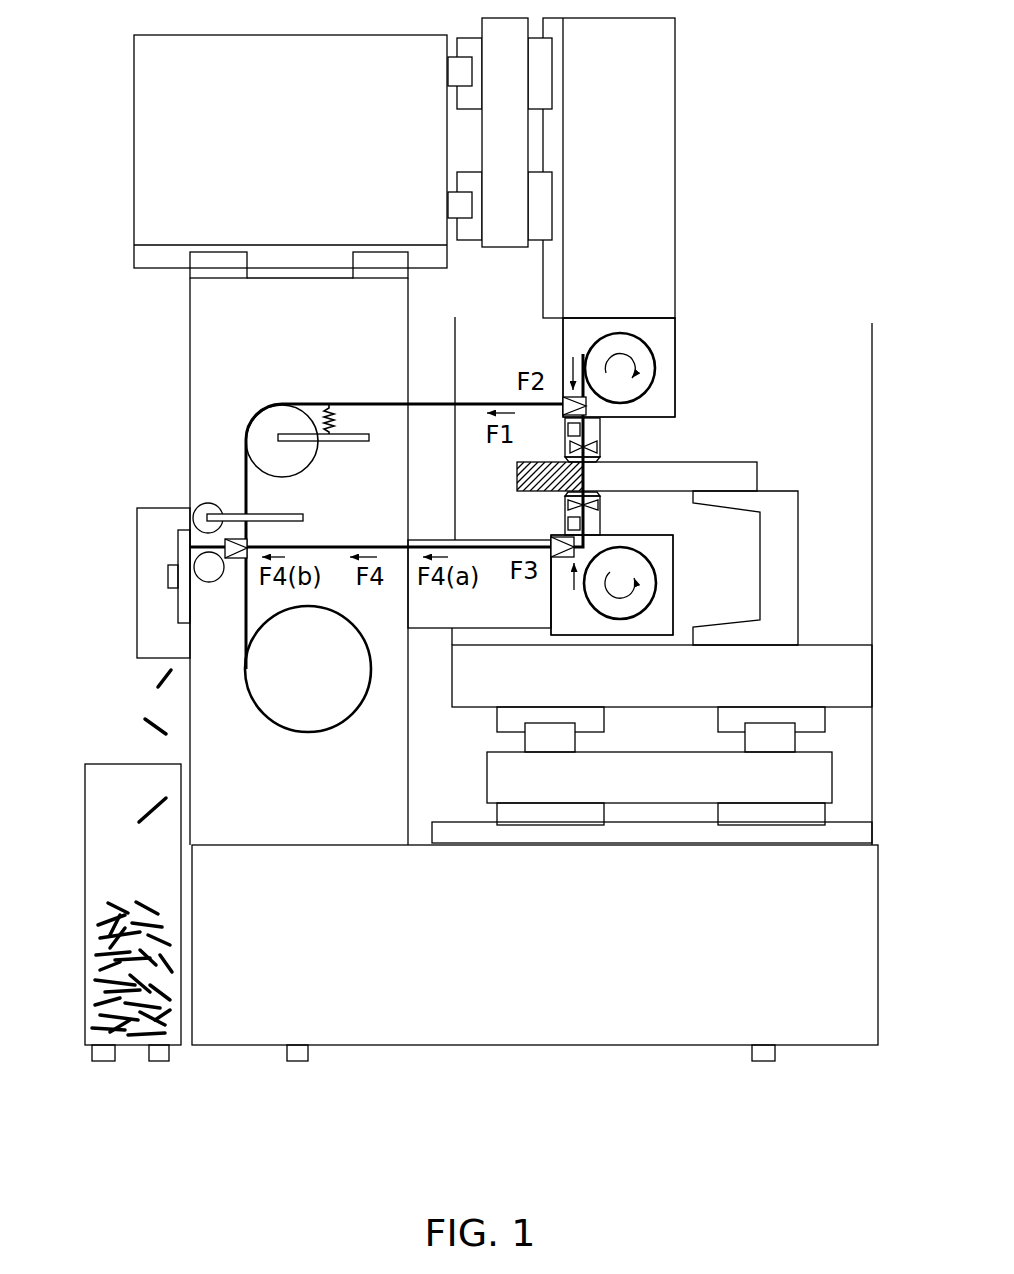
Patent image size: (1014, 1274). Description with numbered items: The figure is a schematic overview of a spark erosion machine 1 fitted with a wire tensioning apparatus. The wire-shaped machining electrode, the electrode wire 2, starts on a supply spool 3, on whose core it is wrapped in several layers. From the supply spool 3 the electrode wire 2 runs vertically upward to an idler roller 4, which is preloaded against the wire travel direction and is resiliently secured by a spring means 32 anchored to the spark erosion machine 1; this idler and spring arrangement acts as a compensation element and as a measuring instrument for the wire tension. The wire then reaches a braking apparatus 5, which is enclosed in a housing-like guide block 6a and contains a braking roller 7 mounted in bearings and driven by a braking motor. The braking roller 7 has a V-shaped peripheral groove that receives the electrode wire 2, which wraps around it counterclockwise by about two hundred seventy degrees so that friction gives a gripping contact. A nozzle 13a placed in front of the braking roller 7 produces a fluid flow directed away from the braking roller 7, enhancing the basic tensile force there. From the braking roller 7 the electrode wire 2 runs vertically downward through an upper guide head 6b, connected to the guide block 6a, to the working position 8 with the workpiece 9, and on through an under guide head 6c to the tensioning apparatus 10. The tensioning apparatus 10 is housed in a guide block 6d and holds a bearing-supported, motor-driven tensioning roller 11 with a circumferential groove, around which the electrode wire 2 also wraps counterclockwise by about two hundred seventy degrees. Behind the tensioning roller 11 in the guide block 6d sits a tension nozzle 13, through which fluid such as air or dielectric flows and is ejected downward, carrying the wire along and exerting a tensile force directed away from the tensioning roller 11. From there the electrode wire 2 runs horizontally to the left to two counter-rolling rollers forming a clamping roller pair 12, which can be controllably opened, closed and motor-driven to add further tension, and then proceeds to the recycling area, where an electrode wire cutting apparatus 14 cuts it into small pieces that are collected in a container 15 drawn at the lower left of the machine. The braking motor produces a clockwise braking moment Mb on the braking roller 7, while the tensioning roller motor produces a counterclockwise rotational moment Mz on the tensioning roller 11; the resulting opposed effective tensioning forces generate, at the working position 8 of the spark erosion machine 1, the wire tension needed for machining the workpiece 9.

The spark erosion machine 1 is at (503, 1060).
The electrode wire 2 is at (243, 465).
The supply spool 3 is at (267, 686).
The idler roller 4 is at (265, 422).
The braking apparatus 5 is at (683, 348).
The guide block 6a is at (657, 400).
The upper guide head 6b is at (606, 445).
The under guide head 6c is at (606, 505).
The guide block 6d is at (660, 566).
The braking roller 7 is at (634, 343).
The working position 8 is at (768, 473).
The workpiece 9 is at (733, 475).
The tensioning apparatus 10 is at (737, 560).
The tensioning roller 11 is at (637, 598).
The clamping roller pair 12 is at (207, 478).
The tension nozzle 13 is at (562, 540).
The nozzle 13a is at (573, 396).
The electrode wire cutting apparatus 14 is at (108, 582).
The wire collection bin 15 is at (87, 934).
The spring means 32 is at (325, 416).
The braking moment Mb is at (617, 436).
The rotational moment Mz is at (612, 517).